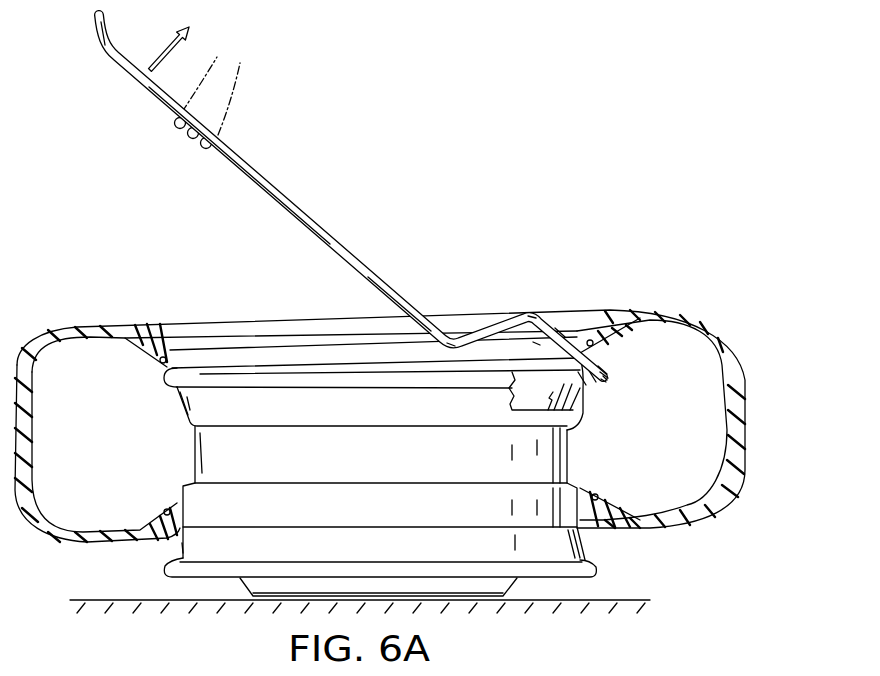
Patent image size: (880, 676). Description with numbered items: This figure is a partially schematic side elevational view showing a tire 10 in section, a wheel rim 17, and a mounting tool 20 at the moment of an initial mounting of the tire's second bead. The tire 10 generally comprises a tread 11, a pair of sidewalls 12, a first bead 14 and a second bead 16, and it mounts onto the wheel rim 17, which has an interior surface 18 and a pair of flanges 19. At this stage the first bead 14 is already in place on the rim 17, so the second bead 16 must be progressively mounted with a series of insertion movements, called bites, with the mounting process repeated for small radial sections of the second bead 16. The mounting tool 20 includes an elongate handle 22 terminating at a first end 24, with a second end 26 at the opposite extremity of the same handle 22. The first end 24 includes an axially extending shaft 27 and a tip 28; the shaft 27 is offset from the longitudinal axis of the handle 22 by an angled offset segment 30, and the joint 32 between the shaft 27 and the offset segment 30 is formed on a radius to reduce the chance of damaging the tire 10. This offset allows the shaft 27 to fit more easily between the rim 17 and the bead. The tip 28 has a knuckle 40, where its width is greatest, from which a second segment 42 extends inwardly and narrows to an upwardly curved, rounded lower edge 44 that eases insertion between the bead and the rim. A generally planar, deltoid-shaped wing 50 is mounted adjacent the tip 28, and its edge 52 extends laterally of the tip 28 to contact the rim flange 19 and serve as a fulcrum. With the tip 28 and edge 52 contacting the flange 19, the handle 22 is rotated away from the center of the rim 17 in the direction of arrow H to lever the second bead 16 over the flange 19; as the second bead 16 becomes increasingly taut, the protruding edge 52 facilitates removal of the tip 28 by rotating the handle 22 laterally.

The tire 10 is at (692, 316).
The tread 11 is at (745, 390).
The sidewalls 12 is at (668, 312).
The first bead 14 is at (598, 497).
The second bead 16 is at (591, 340).
The wheel rim 17 is at (262, 369).
The interior surface 18 is at (178, 408).
The flanges 19 is at (598, 382).
The mounting tool 20 is at (369, 216).
The handle 22 is at (257, 172).
The first end 24 is at (562, 332).
The second end 26 is at (88, 62).
The shaft 27 is at (536, 343).
The tip 28 is at (612, 372).
The offset segment 30 is at (487, 335).
The joint 32 is at (524, 316).
The knuckle 40 is at (610, 367).
The second segment 42 is at (608, 376).
The lower edge 44 is at (608, 380).
The wing 50 is at (577, 372).
The edge 52 is at (594, 385).
The arrow H is at (181, 41).